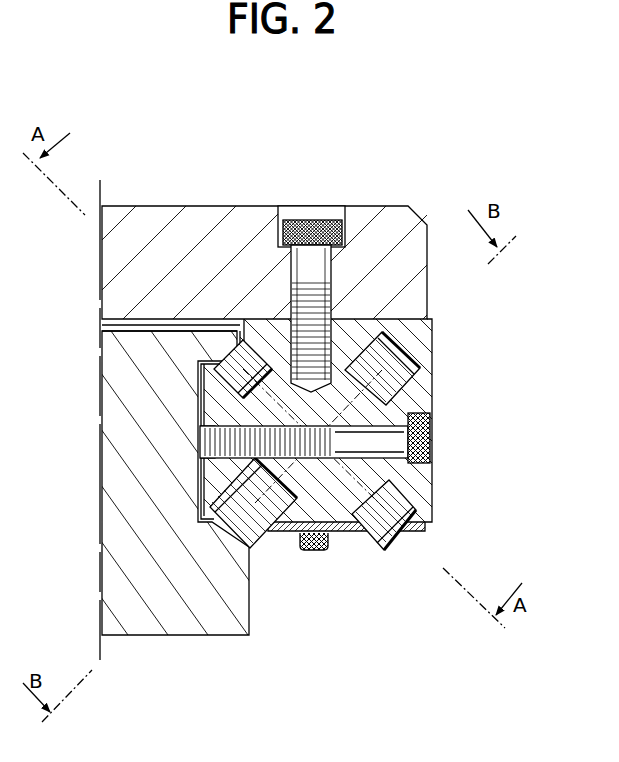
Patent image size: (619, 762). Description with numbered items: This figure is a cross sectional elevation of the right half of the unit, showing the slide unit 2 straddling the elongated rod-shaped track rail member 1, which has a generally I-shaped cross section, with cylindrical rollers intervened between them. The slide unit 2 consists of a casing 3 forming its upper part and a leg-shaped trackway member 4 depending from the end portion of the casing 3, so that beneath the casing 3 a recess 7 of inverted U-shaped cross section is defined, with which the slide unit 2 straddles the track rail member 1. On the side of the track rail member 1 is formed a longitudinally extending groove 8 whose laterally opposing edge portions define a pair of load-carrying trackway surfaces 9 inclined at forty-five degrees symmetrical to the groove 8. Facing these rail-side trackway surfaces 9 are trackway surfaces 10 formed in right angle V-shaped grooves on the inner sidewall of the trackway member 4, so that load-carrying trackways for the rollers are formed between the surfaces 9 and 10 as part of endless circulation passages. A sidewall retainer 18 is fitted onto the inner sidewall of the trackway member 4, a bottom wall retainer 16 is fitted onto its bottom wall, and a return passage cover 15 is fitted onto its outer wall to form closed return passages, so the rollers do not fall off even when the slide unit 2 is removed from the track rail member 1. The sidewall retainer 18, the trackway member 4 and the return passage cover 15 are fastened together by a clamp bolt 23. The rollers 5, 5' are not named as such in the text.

The track rail member 1 is at (120, 556).
The slide unit 2 is at (357, 182).
The casing 3 is at (205, 222).
The trackway member 4 is at (355, 330).
The lower right roller 5 is at (420, 515).
The upper right roller 5' is at (413, 368).
The recess 7 is at (122, 324).
The groove 8 is at (196, 405).
The load-carrying trackway surface 9 is at (222, 360).
The trackway surface 10 is at (292, 390).
The return passage cover 15 is at (420, 341).
The bottom wall retainer 16 is at (345, 535).
The sidewall retainer 18 is at (200, 472).
The clamp bolt 23 is at (432, 437).